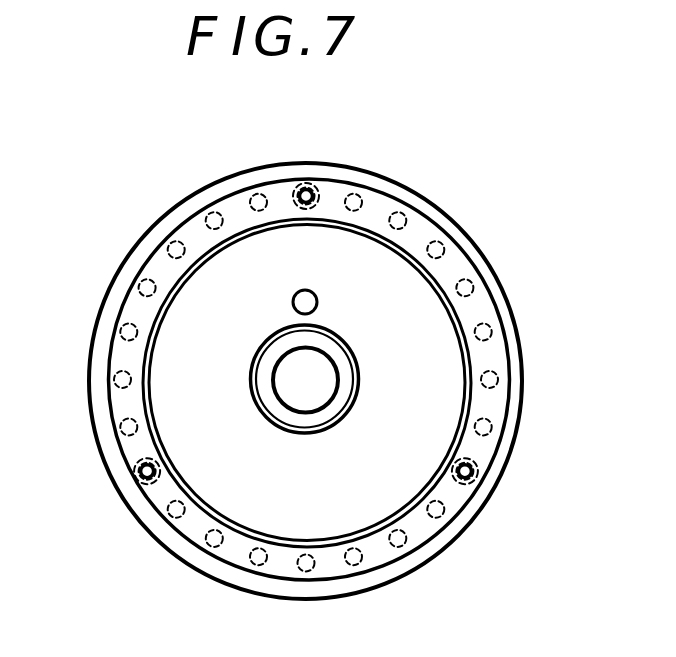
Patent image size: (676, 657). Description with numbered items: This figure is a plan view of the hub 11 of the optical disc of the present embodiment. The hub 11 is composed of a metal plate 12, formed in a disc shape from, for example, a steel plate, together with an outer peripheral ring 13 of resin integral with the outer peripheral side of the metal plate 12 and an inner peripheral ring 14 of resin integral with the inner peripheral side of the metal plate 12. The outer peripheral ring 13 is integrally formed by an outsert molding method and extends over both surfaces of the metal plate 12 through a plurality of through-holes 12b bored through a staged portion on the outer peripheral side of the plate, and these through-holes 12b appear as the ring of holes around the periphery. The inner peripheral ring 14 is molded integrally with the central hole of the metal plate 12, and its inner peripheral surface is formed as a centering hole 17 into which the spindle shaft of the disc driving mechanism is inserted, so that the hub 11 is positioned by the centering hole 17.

The hub 11 is at (498, 480).
The metal plate 12 is at (443, 387).
The through-holes 12b is at (440, 252).
The outer peripheral ring 13 is at (418, 224).
The inner peripheral ring 14 is at (270, 368).
The centering hole 17 is at (328, 357).